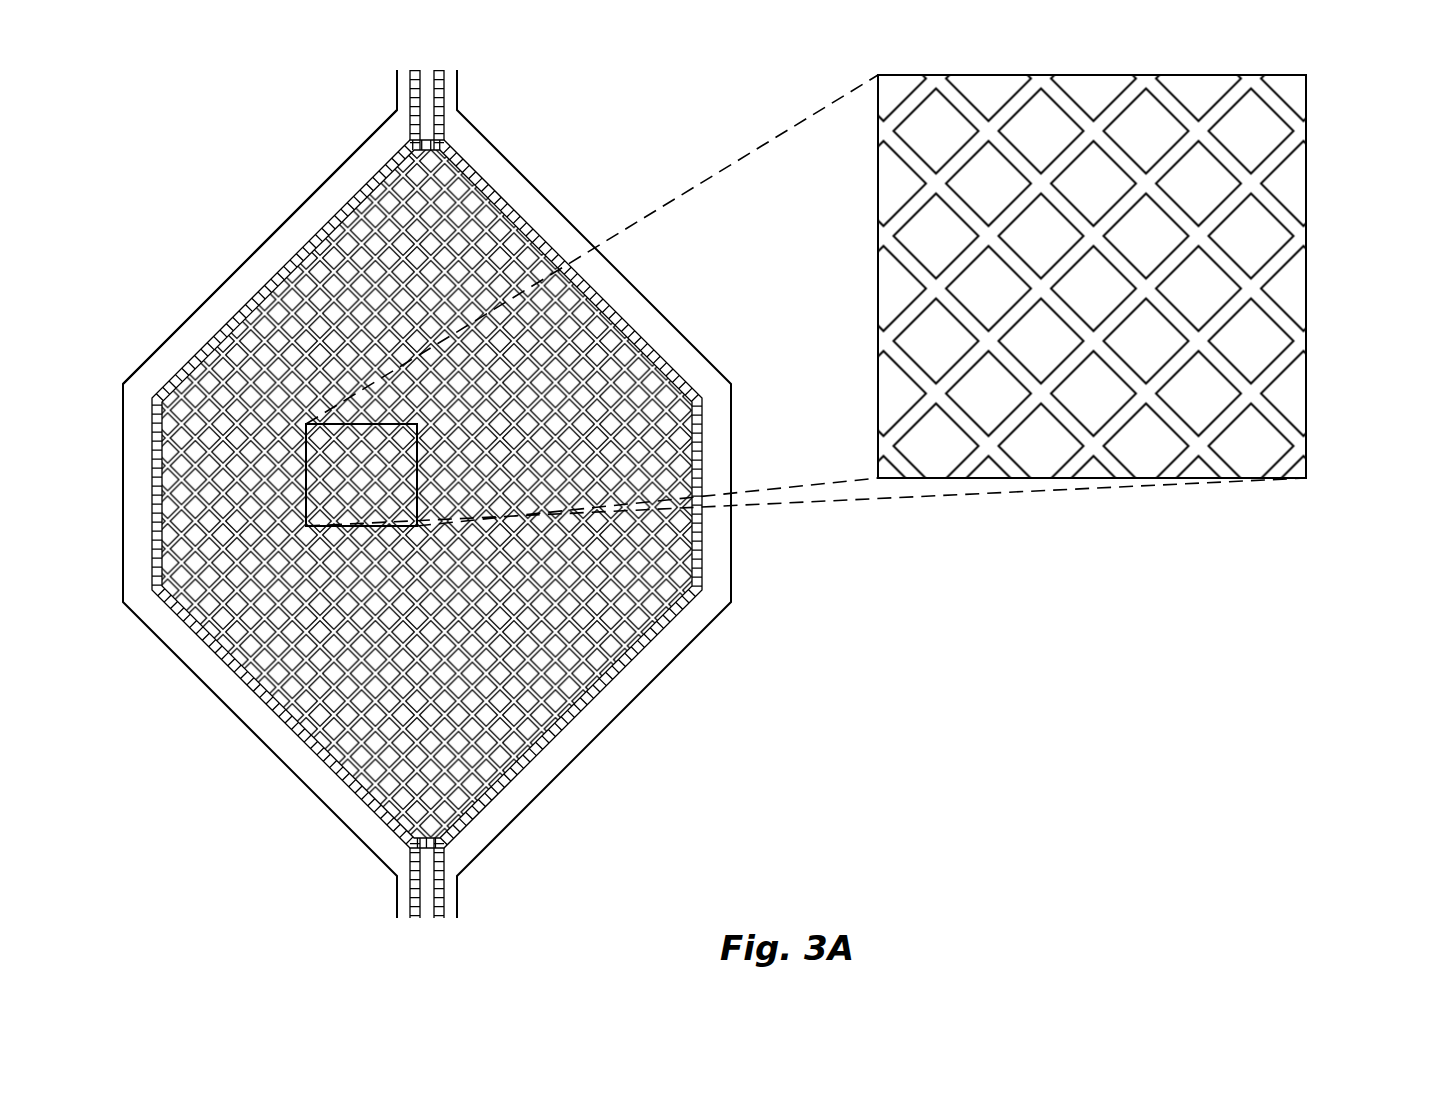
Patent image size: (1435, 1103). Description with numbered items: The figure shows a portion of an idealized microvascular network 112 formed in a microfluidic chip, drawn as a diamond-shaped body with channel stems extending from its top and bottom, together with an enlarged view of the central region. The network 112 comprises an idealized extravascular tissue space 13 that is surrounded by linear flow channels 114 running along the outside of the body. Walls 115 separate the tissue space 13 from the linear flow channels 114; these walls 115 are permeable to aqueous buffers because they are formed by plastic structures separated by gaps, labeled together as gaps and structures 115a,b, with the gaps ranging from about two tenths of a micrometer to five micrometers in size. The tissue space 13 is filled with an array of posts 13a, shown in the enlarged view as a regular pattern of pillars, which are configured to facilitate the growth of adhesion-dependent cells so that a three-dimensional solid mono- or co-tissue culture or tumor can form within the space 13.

The idealized microvascular network (IMN) 112 is at (558, 173).
The linear flow channels 114 is at (248, 273).
The idealized extravascular tissue space 13 is at (300, 503).
The posts 13a is at (1318, 165).
The walls 115 is at (618, 671).
The gaps and plastic structures 115a,b is at (596, 701).